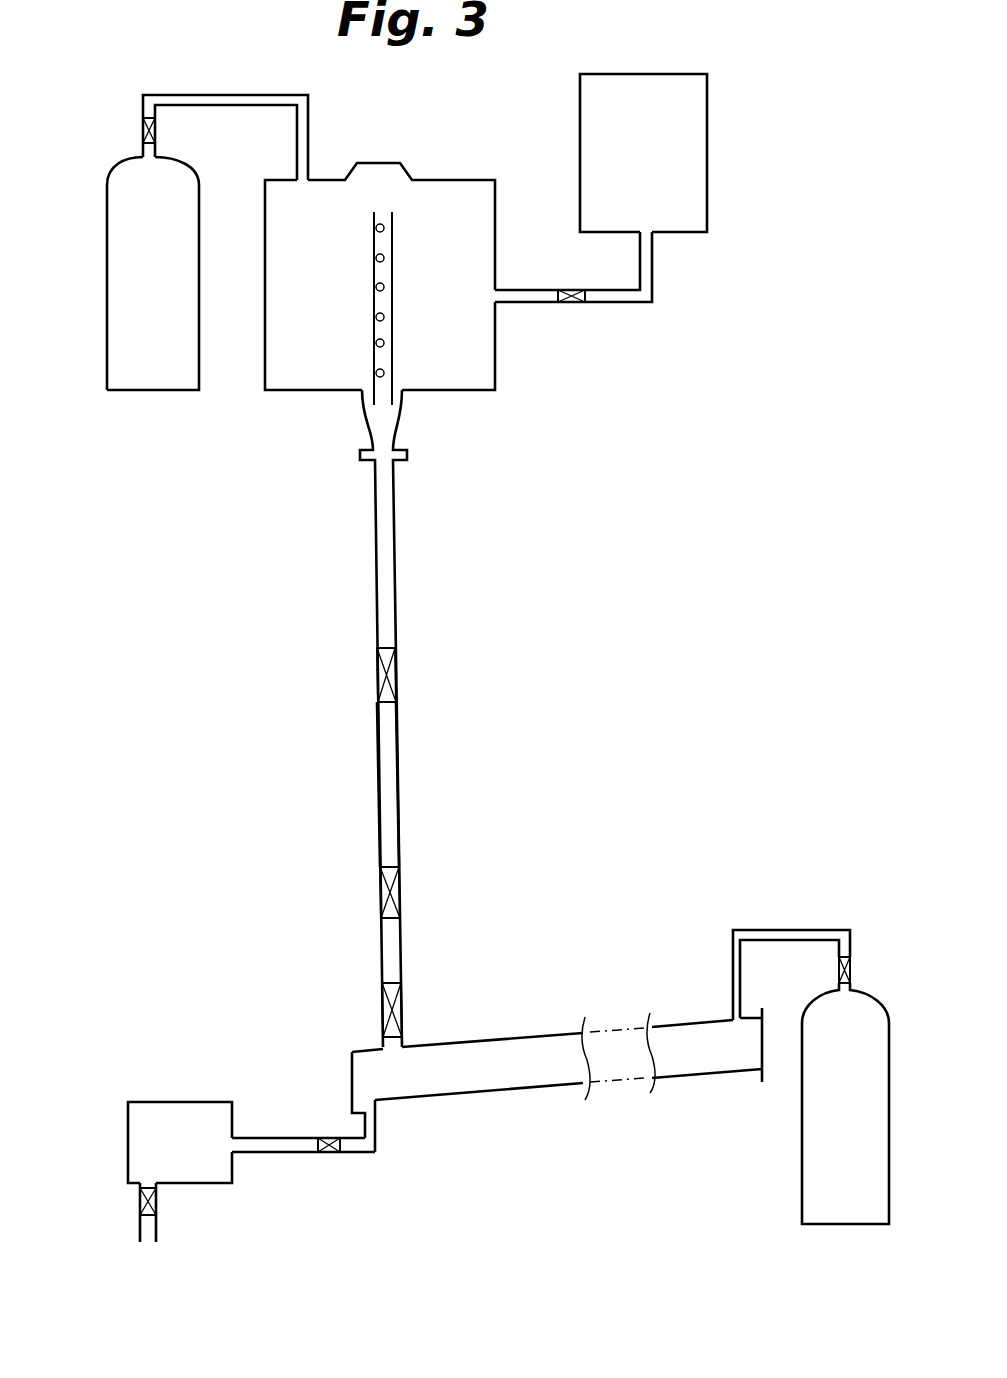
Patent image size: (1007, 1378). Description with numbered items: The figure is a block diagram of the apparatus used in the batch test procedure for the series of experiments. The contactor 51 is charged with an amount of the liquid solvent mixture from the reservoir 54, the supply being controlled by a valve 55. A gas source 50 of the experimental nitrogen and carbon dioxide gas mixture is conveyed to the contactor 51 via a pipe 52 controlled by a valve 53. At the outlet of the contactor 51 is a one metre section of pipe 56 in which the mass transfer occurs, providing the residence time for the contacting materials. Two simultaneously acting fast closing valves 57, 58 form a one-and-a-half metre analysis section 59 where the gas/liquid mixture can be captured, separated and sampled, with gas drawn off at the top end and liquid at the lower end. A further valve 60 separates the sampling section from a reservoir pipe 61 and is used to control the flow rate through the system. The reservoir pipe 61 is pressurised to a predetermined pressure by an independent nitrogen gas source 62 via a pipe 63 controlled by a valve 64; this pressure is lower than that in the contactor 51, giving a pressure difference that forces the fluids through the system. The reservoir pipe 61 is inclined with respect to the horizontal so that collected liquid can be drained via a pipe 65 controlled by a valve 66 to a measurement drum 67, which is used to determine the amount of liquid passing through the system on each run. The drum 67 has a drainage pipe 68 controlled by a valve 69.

The gas source 50 is at (172, 391).
The contactor 51 is at (497, 365).
The pipe 52 is at (308, 118).
The valve 53 is at (143, 125).
The reservoir 54 is at (707, 193).
The valve 55 is at (577, 303).
The section of pipe 56 is at (395, 483).
The fast closing valve 57 is at (397, 676).
The fast closing valve 58 is at (400, 892).
The analysis section 59 is at (378, 768).
The valve 60 is at (382, 995).
The reservoir pipe 61 is at (480, 1046).
The nitrogen gas source 62 is at (802, 1155).
The pipe 63 is at (733, 970).
The valve 64 is at (851, 963).
The pipe 65 is at (393, 1125).
The valve 66 is at (332, 1153).
The measurement drum 67 is at (232, 1108).
The drainage pipe 68 is at (139, 1225).
The valve 69 is at (157, 1203).